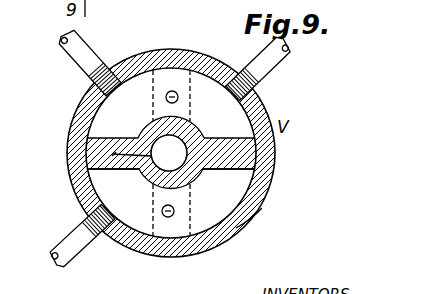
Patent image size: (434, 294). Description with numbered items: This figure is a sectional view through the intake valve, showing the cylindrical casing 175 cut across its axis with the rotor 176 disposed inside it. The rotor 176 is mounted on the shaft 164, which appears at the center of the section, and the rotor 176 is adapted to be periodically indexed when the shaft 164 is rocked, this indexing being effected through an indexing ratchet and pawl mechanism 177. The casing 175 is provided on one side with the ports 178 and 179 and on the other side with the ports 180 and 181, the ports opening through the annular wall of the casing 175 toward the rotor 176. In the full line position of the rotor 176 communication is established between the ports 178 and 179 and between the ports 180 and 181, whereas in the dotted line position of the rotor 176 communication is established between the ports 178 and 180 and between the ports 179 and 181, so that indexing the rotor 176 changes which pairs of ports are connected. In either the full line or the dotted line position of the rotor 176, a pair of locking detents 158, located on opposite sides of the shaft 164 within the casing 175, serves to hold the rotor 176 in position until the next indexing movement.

The locking detents 158 is at (181, 92).
The shaft 164 is at (197, 136).
The cylindrical casing 175 is at (170, 58).
The rotor 176 is at (97, 137).
The indexing ratchet and pawl mechanism 177 is at (141, 171).
The port 178 is at (108, 73).
The port 179 is at (257, 97).
The port 180 is at (90, 210).
The port 181 is at (246, 230).